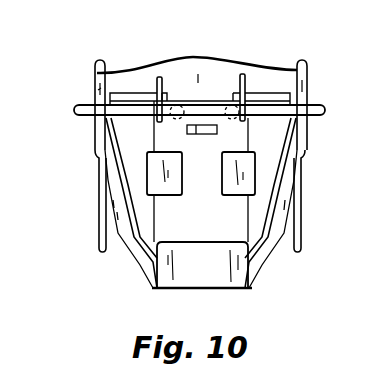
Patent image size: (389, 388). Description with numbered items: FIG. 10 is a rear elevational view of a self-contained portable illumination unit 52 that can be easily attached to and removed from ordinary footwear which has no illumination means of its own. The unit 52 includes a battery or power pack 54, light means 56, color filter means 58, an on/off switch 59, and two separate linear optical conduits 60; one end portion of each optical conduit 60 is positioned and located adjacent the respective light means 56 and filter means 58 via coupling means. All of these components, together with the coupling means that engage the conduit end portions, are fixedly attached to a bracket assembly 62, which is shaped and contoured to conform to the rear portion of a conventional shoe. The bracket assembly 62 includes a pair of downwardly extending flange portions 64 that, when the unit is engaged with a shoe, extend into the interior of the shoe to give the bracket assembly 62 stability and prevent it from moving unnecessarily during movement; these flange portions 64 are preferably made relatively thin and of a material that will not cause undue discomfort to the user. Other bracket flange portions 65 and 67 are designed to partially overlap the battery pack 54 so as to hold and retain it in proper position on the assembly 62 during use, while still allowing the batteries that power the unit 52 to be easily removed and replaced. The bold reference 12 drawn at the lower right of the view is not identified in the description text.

The housing 12 is at (371, 265).
The illumination unit 52 is at (325, 51).
The battery or power pack 54 is at (232, 222).
The light means 56 is at (177, 104).
The color filter means 58 is at (157, 80).
The on/off switch 59 is at (217, 128).
The linear optical conduits 60 is at (82, 105).
The bracket assembly 62 is at (128, 265).
The downwardly extending flange portions 64 is at (100, 218).
The bracket flange portion 65 is at (160, 168).
The bracket flange portion 67 is at (193, 270).